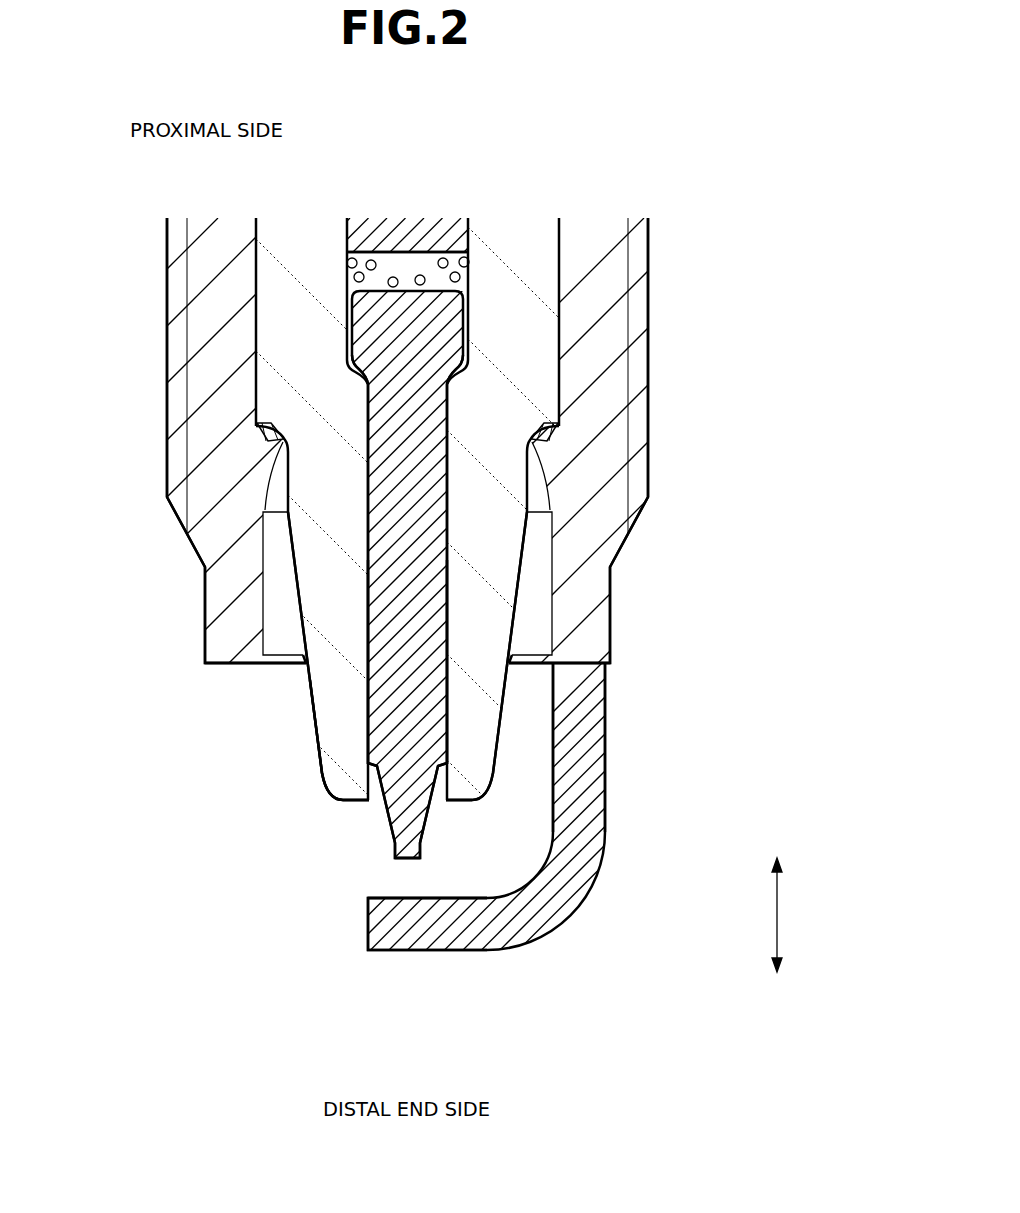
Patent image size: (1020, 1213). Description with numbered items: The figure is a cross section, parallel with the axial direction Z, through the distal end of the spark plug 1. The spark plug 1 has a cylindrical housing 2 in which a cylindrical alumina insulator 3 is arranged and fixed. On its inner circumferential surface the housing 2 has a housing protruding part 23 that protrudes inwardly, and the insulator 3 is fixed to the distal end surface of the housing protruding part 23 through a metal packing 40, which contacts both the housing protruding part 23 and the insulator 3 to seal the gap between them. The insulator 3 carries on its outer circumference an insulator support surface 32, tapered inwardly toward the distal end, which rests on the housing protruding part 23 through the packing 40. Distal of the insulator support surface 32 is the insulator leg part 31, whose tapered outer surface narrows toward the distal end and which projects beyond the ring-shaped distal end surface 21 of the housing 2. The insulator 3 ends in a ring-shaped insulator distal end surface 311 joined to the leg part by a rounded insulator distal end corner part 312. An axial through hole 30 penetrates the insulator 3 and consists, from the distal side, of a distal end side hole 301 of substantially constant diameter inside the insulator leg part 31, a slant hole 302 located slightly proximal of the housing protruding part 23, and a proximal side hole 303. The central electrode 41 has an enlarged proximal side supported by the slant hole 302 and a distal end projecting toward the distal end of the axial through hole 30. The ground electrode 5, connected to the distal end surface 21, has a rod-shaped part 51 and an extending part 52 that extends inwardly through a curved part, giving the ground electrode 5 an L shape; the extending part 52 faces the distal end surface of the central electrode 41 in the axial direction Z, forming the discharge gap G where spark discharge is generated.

The spark plug 1 is at (628, 154).
The housing 2 is at (227, 307).
The distal end surface of the housing 21 is at (233, 664).
The housing protruding part 23 is at (273, 463).
The insulator 3 is at (517, 333).
The axial through hole 30 is at (440, 475).
The distal end side hole 301 is at (440, 585).
The slant hole 302 is at (447, 378).
The proximal side hole 303 is at (465, 234).
The insulator leg part 31 is at (325, 575).
The insulator distal end surface 311 is at (357, 803).
The insulator distal end corner part 312 is at (327, 797).
The insulator support surface 32 is at (540, 438).
The metal packing 40 is at (257, 428).
The central electrode 41 is at (408, 724).
The ground electrode 5 is at (567, 903).
The rod-shaped part 51 is at (580, 720).
The extending part 52 is at (409, 922).
The discharge gap G is at (408, 884).
The axial direction Z is at (789, 915).